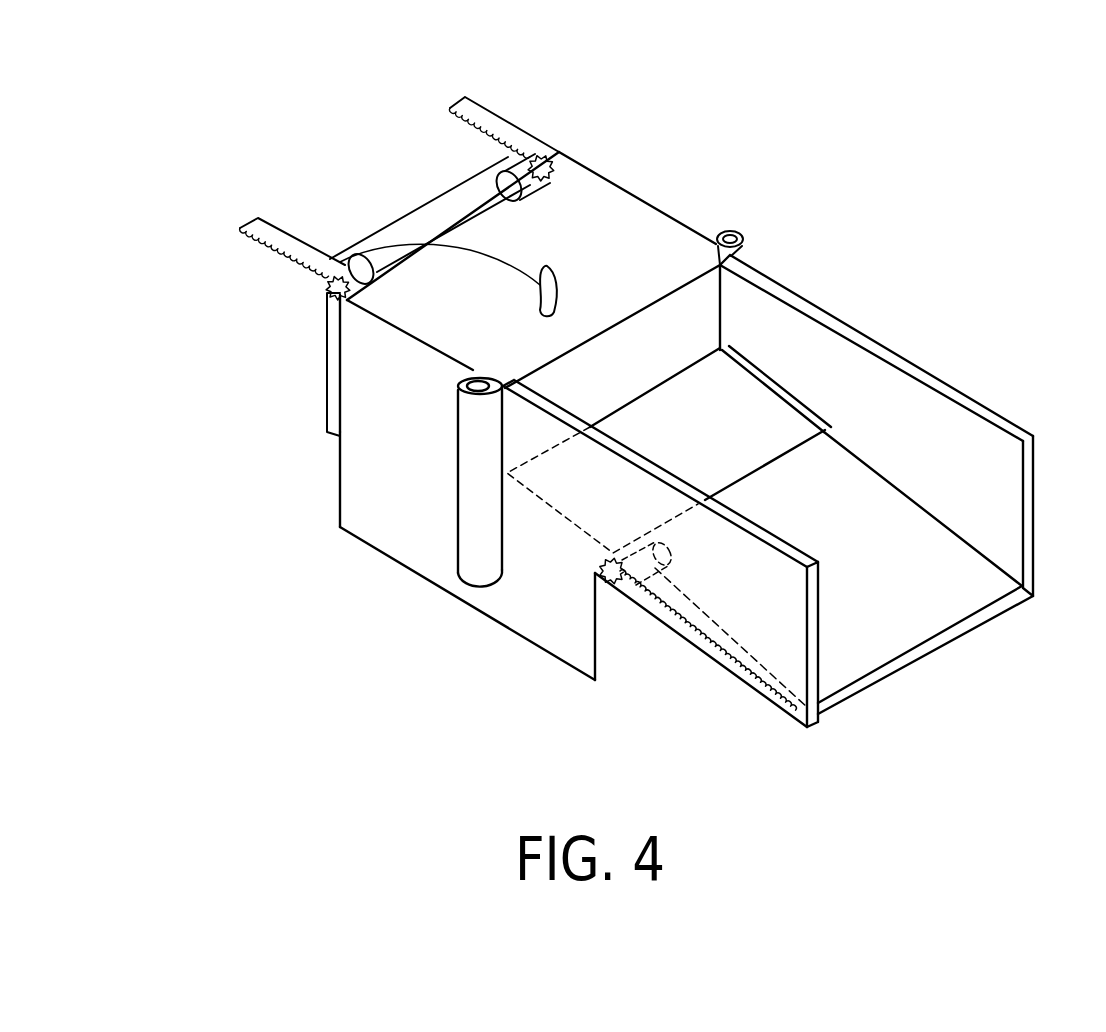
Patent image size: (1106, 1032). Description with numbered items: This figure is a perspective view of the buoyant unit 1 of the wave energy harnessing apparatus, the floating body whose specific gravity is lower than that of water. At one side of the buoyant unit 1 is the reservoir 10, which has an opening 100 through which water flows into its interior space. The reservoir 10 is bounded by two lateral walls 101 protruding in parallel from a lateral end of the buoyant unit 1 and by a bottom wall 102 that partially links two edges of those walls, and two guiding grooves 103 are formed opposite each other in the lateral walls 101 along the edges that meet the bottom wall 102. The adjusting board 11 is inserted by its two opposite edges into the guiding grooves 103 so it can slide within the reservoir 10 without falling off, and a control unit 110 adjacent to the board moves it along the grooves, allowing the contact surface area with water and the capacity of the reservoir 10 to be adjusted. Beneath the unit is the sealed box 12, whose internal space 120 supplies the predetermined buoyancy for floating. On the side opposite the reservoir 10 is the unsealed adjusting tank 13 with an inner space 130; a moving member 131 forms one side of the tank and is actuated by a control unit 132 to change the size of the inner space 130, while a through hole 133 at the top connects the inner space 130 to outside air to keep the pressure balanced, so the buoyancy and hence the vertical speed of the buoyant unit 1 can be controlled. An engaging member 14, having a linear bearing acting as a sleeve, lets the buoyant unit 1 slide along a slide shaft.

The buoyant unit 1 is at (789, 272).
The reservoir 10 is at (893, 388).
The opening 100 is at (1040, 455).
The lateral walls 101 is at (857, 368).
The bottom wall 102 is at (713, 398).
The guiding grooves 103 is at (786, 383).
The adjusting board 11 is at (900, 527).
The control unit 110 is at (650, 553).
The sealed box 12 is at (363, 515).
The space 120 is at (415, 537).
The adjusting tank 13 is at (213, 267).
The inner space 130 is at (377, 428).
The moving member 131 is at (330, 407).
The control unit 132 is at (362, 255).
The through hole 133 is at (325, 272).
The engaging member 14 is at (742, 232).